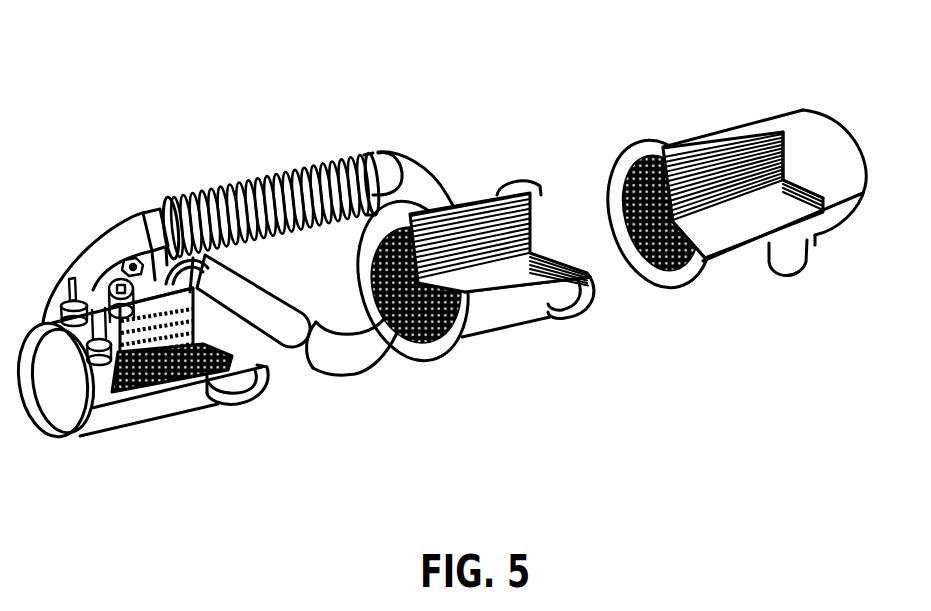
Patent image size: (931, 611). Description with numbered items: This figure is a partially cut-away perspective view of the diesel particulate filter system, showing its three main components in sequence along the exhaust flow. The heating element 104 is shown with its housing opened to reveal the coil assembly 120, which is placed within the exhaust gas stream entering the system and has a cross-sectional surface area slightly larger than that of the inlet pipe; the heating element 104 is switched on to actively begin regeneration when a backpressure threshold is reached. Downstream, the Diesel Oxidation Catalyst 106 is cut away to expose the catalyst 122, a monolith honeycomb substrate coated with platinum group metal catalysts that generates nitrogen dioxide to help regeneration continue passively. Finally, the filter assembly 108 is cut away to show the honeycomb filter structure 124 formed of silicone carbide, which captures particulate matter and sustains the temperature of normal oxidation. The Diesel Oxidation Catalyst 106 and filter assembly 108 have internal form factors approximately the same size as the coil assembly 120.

The heating element 104 is at (70, 407).
The Diesel Oxidation Catalyst (DOC) 106 is at (468, 200).
The filter assembly 108 is at (731, 135).
The coil assembly 120 is at (207, 372).
The catalyst 122 is at (517, 300).
The honeycomb filter structure 124 is at (787, 223).